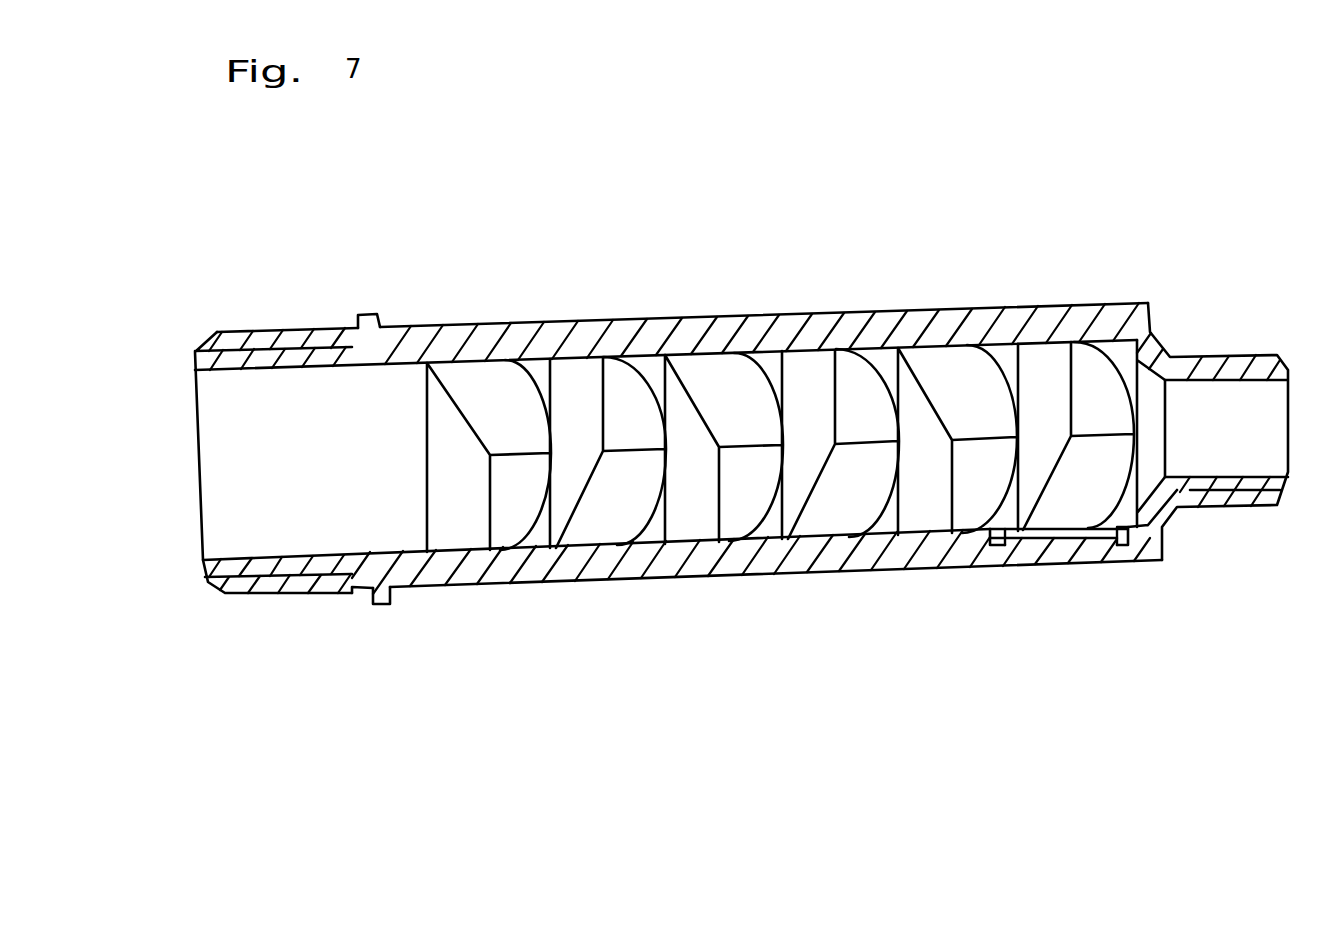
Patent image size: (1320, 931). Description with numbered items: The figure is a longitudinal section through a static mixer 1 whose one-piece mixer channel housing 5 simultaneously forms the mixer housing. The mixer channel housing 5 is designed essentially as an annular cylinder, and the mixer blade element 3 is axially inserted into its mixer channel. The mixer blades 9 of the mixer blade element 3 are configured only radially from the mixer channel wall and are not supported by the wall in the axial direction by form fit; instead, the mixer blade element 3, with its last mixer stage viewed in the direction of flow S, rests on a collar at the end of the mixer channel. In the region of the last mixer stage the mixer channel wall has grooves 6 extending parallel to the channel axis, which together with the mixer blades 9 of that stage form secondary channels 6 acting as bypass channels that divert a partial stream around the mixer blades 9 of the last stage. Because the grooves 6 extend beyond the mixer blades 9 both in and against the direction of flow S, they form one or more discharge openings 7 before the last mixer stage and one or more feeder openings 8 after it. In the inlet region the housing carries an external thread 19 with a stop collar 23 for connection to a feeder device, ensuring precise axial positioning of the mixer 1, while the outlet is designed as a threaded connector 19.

The static mixer 1 is at (720, 268).
The mixer blade element 3 is at (612, 490).
The mixer channel housing 5 is at (458, 338).
The grooves 6 is at (1061, 552).
The discharge openings 7 is at (998, 552).
The feeder openings 8 is at (1121, 550).
The mixer blades 9 is at (1045, 460).
The external thread 19 is at (270, 325).
The stop collar 23 is at (360, 611).
The direction of flow S is at (168, 460).